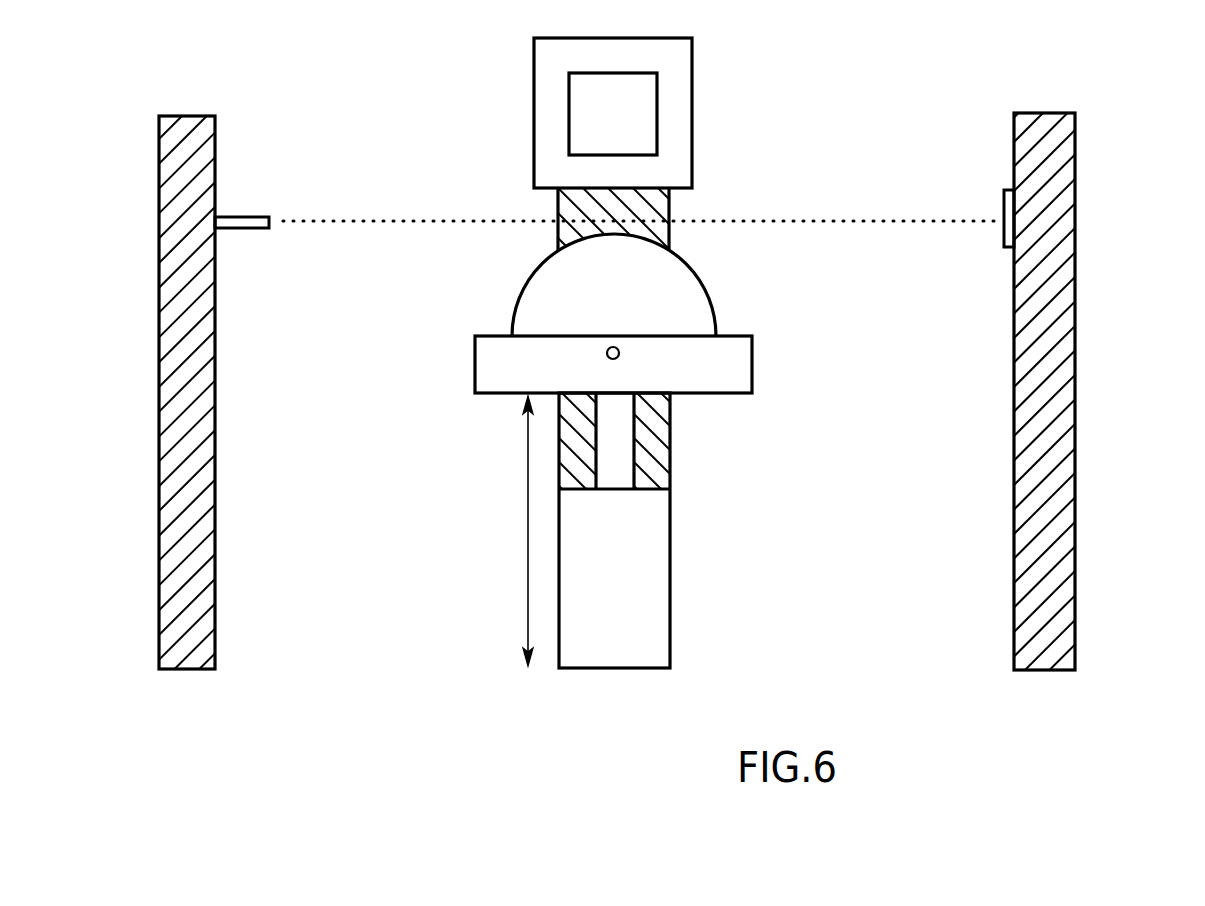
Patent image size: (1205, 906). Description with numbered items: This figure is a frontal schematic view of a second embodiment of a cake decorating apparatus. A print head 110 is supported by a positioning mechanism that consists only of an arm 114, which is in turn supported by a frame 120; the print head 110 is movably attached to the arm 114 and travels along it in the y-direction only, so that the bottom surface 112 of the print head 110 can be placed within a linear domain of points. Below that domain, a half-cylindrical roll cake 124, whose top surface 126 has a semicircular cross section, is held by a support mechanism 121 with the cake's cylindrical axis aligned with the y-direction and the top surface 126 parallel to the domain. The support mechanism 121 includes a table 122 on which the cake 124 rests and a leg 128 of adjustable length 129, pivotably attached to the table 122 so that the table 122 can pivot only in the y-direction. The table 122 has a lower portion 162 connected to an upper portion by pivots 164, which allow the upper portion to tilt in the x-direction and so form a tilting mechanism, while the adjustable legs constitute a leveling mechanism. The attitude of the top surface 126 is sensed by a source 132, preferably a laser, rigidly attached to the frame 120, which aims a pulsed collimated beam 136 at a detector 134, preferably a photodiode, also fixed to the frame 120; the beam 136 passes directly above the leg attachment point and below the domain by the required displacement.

The print head 110 is at (692, 97).
The bottom surface 112 is at (670, 204).
The arm 114 is at (590, 113).
The frame 120 is at (170, 206).
The support mechanism 121 is at (725, 530).
The table 122 is at (554, 338).
The half-cylindrical roll cake 124 is at (570, 285).
The top surface 126 is at (536, 281).
The leg 128 is at (628, 549).
The adjustable length 129 is at (527, 510).
The source 132 is at (238, 218).
The detector 134 is at (1004, 200).
The beam 136 is at (388, 220).
The lower portion 162 is at (549, 376).
The pivots 164 is at (620, 353).